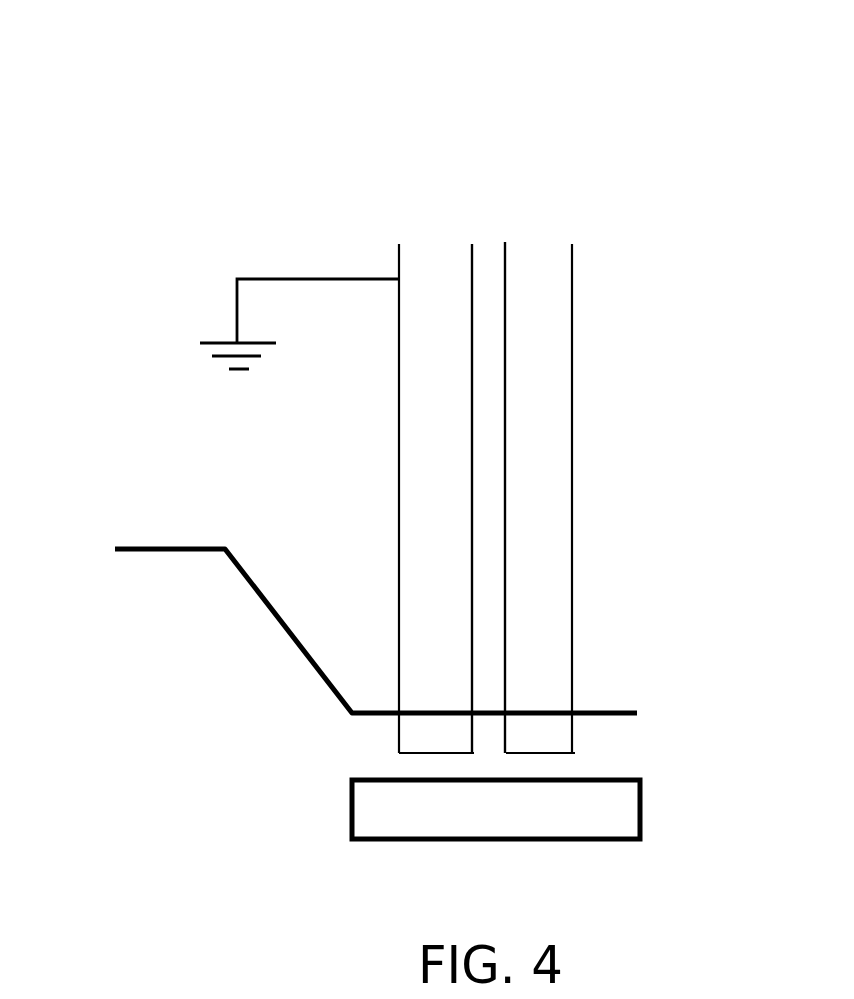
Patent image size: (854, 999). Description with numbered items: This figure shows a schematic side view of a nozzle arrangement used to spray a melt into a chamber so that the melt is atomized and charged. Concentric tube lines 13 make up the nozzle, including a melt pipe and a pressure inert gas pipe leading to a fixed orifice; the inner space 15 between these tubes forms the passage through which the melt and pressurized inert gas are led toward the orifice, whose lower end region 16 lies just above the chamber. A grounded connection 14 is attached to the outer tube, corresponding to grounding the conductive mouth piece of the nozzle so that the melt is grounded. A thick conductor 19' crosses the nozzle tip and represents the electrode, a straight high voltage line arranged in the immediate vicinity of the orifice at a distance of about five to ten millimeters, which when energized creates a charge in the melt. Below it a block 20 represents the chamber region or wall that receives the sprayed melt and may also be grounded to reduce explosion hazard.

The concentric tube assembly 13 is at (572, 373).
The grounded outer electrode connection 14 is at (285, 278).
The inner electrode gap 15 is at (489, 622).
The tube end caps 16 is at (435, 753).
The conductive plate 19' is at (330, 676).
The base block 20 is at (640, 780).